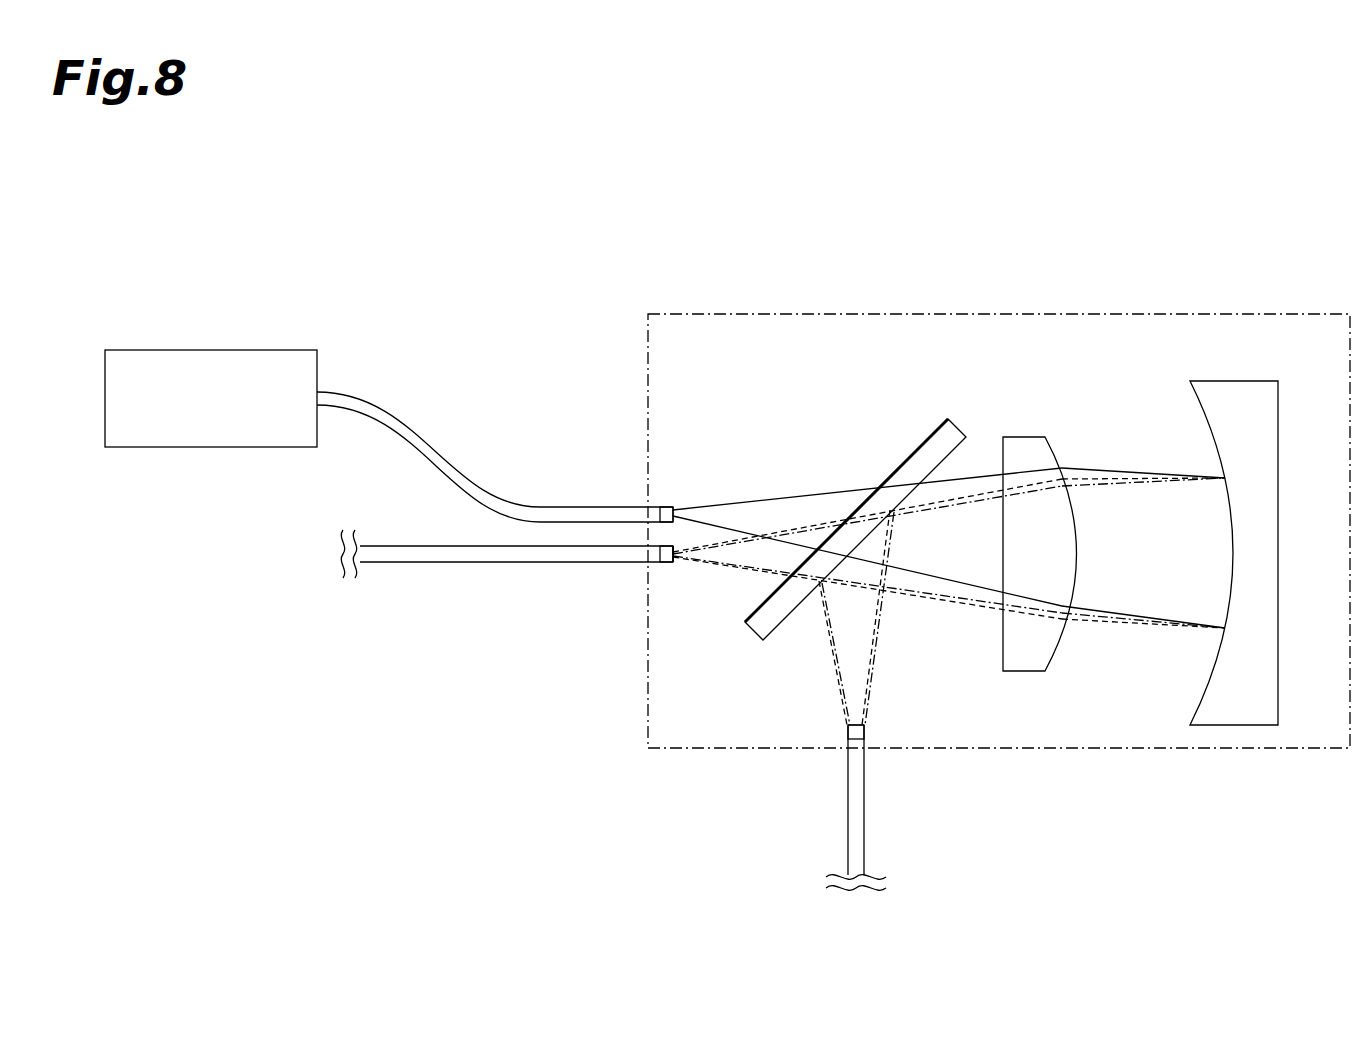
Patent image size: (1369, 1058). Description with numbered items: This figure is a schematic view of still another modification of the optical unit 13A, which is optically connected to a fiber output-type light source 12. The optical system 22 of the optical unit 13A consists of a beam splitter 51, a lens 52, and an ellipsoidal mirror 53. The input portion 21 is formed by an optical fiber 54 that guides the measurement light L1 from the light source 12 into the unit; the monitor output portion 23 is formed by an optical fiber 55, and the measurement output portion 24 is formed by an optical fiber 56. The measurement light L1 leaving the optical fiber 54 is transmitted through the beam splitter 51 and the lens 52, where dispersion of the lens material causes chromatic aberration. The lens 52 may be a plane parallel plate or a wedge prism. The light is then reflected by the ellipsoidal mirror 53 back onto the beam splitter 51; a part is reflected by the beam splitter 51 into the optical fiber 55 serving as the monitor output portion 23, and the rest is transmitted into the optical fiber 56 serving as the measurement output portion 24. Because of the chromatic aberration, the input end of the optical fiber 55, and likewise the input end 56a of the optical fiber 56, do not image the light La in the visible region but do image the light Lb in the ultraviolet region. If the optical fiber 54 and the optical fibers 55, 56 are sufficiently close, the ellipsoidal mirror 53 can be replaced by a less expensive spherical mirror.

The light source 12 is at (213, 350).
The optical unit 13A is at (628, 268).
The input portion 21 is at (633, 496).
The optical system 22 is at (1140, 574).
The monitor output portion 23 is at (837, 761).
The measurement output portion 24 is at (635, 570).
The beam splitter 51 is at (914, 456).
The lens 52 is at (1024, 437).
The ellipsoidal mirror 53 is at (1242, 395).
The optical fiber 54 is at (562, 507).
The optical fiber 55 is at (866, 810).
The optical fiber 56 is at (425, 562).
The input end 56a is at (670, 558).
The measurement light L1 is at (777, 456).
The light having a wavelength in the visible region La is at (728, 570).
The light having a wavelength in the ultraviolet region Lb is at (684, 563).